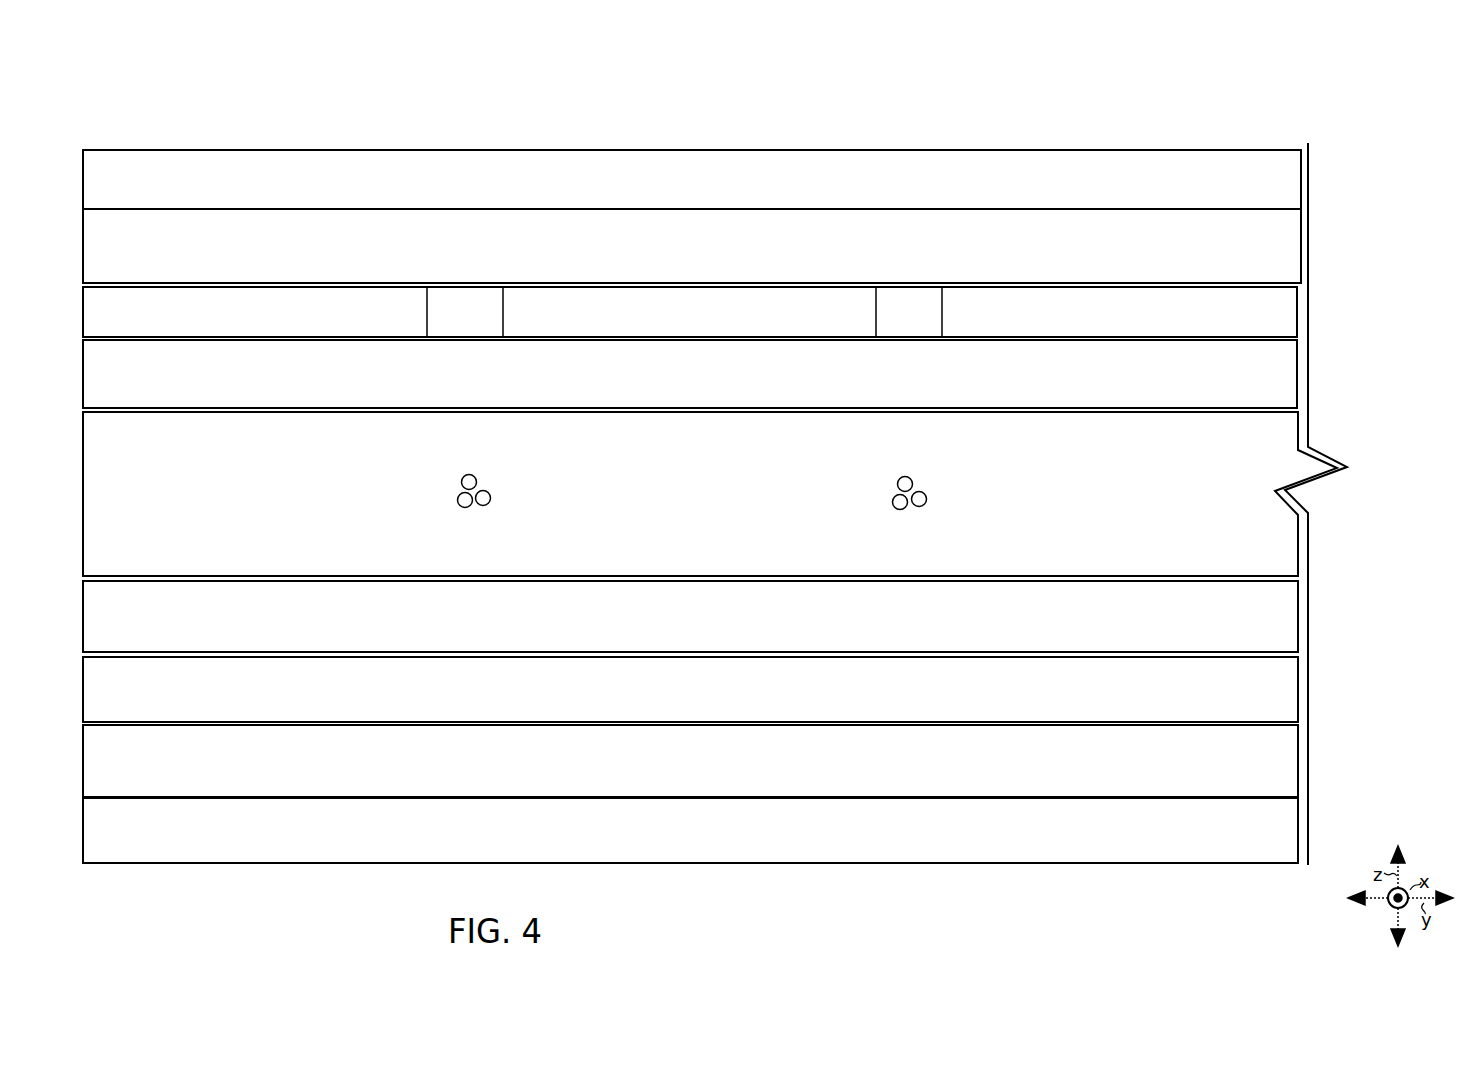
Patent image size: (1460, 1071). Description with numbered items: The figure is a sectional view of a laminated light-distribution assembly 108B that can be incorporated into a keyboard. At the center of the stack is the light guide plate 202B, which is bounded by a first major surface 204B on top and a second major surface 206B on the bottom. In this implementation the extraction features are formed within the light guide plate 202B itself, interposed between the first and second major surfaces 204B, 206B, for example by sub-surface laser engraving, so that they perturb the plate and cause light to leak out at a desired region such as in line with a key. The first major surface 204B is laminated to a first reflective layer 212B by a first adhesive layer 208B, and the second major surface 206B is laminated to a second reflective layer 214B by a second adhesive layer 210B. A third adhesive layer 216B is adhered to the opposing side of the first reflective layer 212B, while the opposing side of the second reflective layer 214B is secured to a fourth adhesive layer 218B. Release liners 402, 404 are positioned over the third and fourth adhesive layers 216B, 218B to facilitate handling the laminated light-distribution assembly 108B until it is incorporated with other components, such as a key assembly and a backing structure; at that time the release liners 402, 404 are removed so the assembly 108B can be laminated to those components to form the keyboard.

The laminated light-distribution assembly 108B is at (1208, 66).
The release liner 402 is at (820, 199).
The third adhesive layer 216B is at (858, 267).
The first reflective layer 212B is at (835, 325).
The first adhesive layer 208B is at (862, 388).
The first major surface 204B is at (930, 408).
The light guide plate 202B is at (393, 501).
The second major surface 206B is at (918, 580).
The second adhesive layer 210B is at (692, 629).
The second reflective layer 214B is at (952, 706).
The fourth adhesive layer 218B is at (947, 769).
The release liner 404 is at (772, 851).